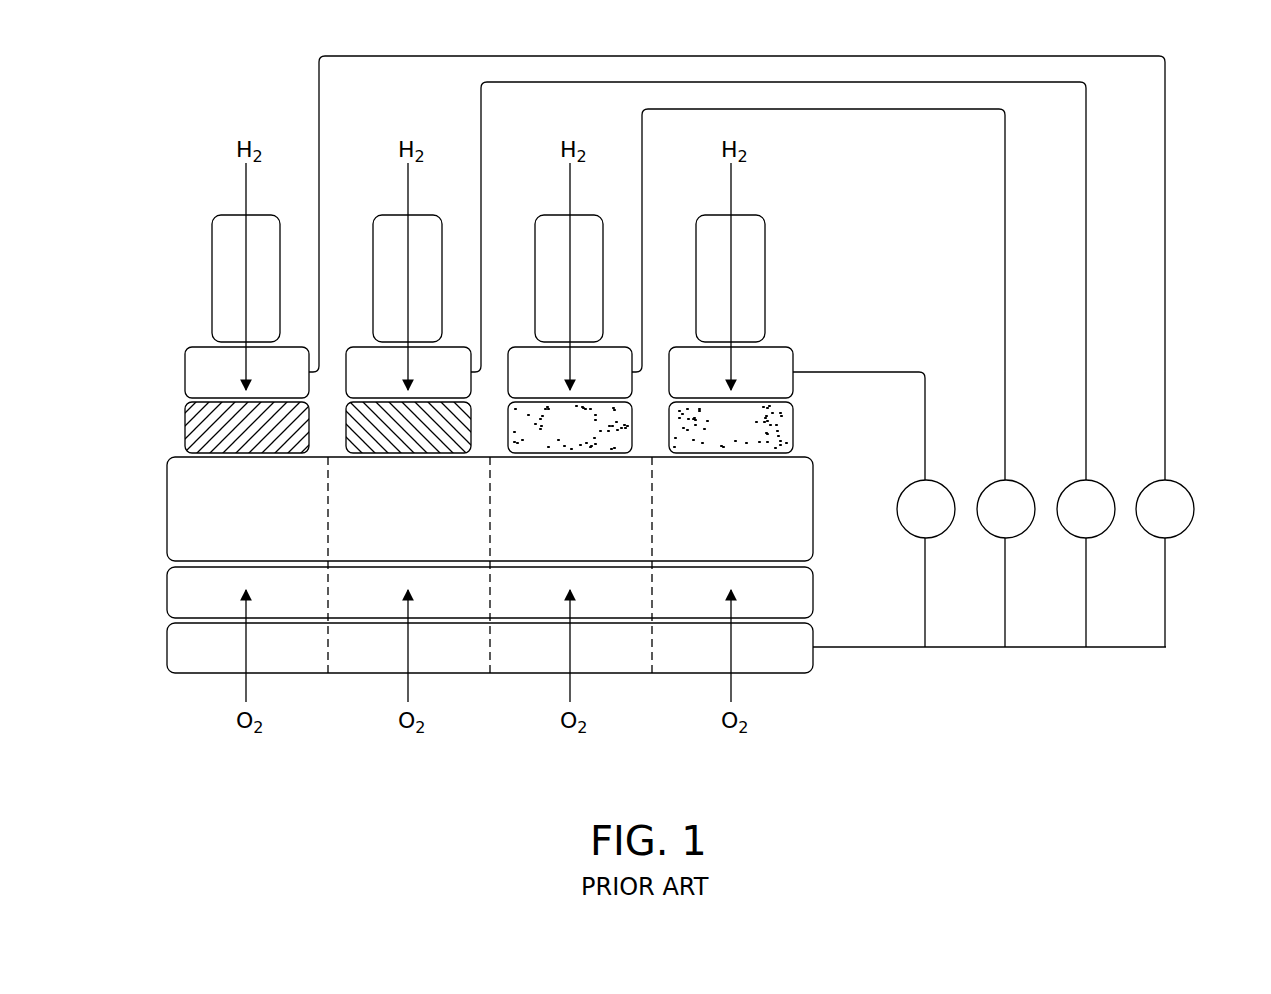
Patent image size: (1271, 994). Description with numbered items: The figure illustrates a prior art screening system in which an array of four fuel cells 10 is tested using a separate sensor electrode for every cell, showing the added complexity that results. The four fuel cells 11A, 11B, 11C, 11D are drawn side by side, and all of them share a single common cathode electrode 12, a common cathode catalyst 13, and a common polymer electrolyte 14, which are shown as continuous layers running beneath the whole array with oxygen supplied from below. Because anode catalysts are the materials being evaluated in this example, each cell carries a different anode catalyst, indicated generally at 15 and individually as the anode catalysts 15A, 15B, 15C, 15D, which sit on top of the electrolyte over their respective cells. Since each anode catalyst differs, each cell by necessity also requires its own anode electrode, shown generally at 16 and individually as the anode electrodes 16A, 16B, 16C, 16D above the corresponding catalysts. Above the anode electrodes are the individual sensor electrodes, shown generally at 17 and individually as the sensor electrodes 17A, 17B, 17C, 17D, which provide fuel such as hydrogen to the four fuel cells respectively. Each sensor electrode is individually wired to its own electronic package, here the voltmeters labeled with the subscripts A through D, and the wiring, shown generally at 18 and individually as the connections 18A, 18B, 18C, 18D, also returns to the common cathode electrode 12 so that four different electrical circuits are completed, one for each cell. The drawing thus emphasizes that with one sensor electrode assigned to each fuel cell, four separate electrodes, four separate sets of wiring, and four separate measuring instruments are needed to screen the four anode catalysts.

The array of fuel cells 10 is at (325, 730).
The fuel cell 11A is at (267, 525).
The fuel cell 11B is at (428, 525).
The fuel cell 11C is at (590, 525).
The fuel cell 11D is at (751, 525).
The common cathode electrode 12 is at (167, 648).
The cathode catalyst 13 is at (167, 592).
The polymer electrolyte 14 is at (167, 510).
The anode catalysts 15 is at (185, 428).
The anode catalyst 15A is at (266, 439).
The anode catalyst 15B is at (427, 439).
The anode catalyst 15C is at (589, 439).
The anode catalyst 15D is at (750, 439).
The anode electrodes 16 is at (185, 375).
The anode electrode 16A is at (229, 385).
The anode electrode 16B is at (391, 385).
The anode electrode 16C is at (553, 385).
The anode electrode 16D is at (714, 385).
The sensor electrodes 17 is at (123, 215).
The sensor electrode 17A is at (212, 280).
The sensor electrode 17B is at (376, 217).
The sensor electrode 17C is at (538, 217).
The sensor electrode 17D is at (765, 238).
The voltage measurement circuits 18 is at (1195, 660).
The voltage measurement circuit A 18A is at (1165, 220).
The voltage measurement circuit B 18B is at (1086, 300).
The voltage measurement circuit C 18C is at (1005, 262).
The voltage measurement circuit D 18D is at (852, 371).